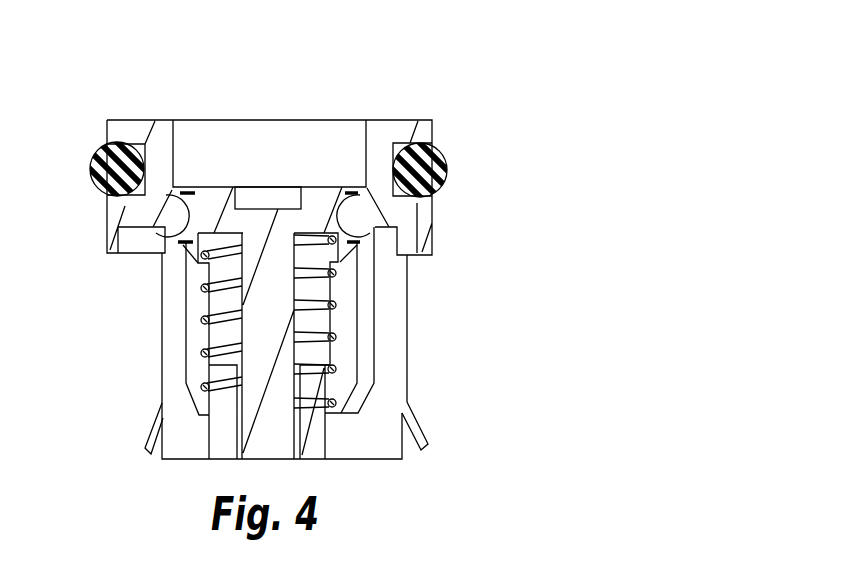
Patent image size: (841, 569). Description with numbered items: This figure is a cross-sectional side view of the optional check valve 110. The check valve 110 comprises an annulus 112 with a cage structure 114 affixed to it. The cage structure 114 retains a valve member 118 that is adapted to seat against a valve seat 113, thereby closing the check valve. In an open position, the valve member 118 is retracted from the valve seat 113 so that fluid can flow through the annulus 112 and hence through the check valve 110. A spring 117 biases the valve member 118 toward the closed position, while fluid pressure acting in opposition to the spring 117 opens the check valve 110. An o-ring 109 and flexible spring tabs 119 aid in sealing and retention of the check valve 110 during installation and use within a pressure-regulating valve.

The check valve 110 is at (345, 84).
The annulus 112 is at (436, 131).
The o-ring 109 is at (95, 160).
The valve seat 113 is at (167, 207).
The cage structure 114 is at (392, 344).
The spring 117 is at (312, 279).
The valve member 118 is at (213, 330).
The flexible spring tabs 119 is at (418, 432).